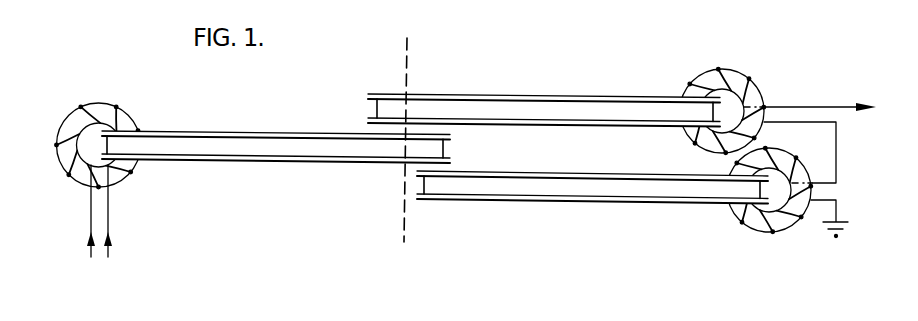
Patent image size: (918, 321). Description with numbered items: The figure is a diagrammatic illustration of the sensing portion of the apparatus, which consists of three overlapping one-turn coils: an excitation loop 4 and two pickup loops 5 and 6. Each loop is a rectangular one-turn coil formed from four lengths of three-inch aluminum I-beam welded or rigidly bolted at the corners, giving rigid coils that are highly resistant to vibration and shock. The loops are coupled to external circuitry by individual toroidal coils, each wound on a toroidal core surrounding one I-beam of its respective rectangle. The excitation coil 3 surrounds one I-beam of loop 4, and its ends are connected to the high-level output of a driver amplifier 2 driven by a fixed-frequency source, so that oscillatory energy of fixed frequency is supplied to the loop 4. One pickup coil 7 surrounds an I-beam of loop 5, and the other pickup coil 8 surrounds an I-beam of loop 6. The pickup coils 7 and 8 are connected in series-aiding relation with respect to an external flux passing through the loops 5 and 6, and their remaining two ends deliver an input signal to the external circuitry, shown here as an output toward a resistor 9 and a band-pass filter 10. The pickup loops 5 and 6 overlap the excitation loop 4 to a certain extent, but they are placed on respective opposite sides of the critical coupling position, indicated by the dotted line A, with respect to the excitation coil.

The driver amplifier 2 is at (215, 301).
The excitation coil 3 is at (100, 103).
The excitation coil loop 4 is at (235, 131).
The pickup coil loop 5 is at (552, 94).
The pickup coil loop 6 is at (577, 196).
The pickup coil 7 is at (710, 69).
The pickup coil 8 is at (747, 219).
The resistor 9 is at (877, 82).
The band pass filter 10 is at (860, 96).
The critical coupling position A is at (407, 80).